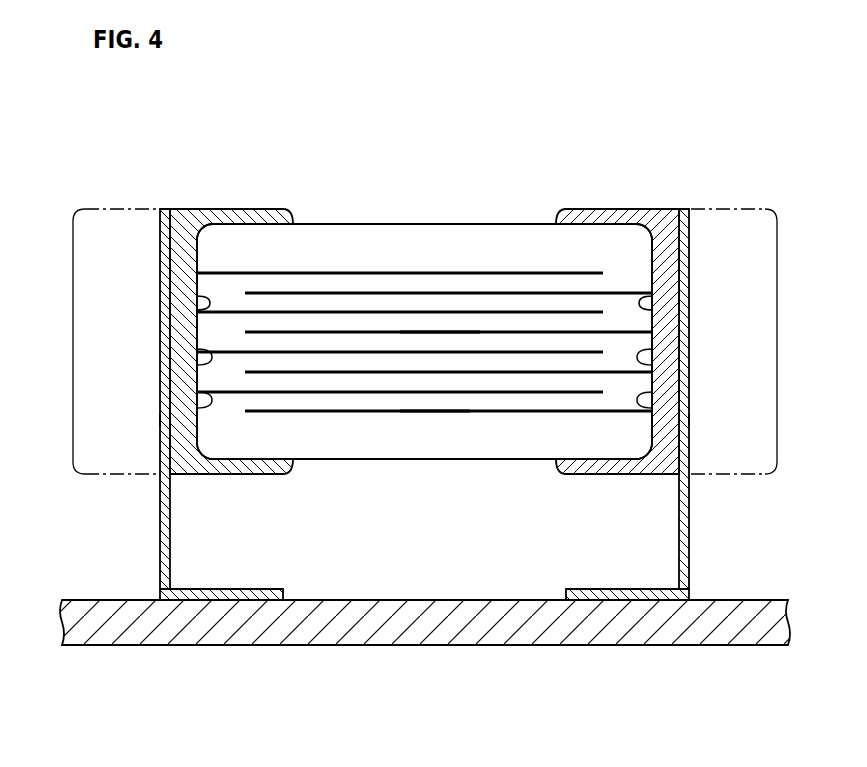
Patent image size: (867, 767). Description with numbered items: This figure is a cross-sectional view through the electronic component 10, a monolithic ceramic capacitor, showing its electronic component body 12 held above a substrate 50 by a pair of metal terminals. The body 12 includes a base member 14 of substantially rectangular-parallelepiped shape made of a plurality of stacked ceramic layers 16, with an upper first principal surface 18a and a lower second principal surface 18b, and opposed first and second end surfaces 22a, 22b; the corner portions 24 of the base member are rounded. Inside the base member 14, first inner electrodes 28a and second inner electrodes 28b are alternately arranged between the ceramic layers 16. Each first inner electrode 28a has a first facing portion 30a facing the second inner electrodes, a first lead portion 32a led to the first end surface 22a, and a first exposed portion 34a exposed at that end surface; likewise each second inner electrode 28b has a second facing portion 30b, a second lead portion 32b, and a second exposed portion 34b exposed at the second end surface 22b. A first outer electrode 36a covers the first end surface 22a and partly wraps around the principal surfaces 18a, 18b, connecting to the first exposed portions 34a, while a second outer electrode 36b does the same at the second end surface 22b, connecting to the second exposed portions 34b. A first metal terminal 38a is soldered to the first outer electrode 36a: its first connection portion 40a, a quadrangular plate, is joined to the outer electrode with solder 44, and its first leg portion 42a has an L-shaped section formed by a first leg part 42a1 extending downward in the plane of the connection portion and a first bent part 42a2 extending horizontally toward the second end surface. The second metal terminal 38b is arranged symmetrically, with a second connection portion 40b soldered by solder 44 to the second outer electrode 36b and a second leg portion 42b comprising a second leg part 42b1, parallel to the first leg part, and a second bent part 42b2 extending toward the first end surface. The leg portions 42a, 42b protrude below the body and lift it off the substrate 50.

The electronic component 10 is at (222, 198).
The electronic component body 12 is at (319, 213).
The base member 14 is at (342, 223).
The ceramic layers 16 is at (412, 323).
The first principal surface 18a is at (477, 224).
The second principal surface 18b is at (370, 460).
The first end surface 22a is at (186, 298).
The second end surface 22b is at (664, 300).
The corner portions 24 is at (193, 213).
The first inner electrodes 28a is at (299, 284).
The second inner electrodes 28b is at (570, 409).
The first facing portion 30a is at (428, 413).
The second facing portion 30b is at (444, 330).
The first lead portion 32a is at (193, 398).
The second lead portion 32b is at (660, 397).
The first exposed portion 34a is at (197, 357).
The second exposed portion 34b is at (660, 353).
The first outer electrode 36a is at (250, 210).
The second outer electrode 36b is at (592, 208).
The first metal terminal 38a is at (162, 207).
The second metal terminal 38b is at (687, 208).
The first connection portion 40a is at (73, 337).
The second connection portion 40b is at (777, 337).
The first leg portion 42a is at (252, 697).
The first leg part 42a1 is at (147, 478).
The first bent part 42a2 is at (282, 655).
The second leg portion 42b is at (738, 693).
The second leg part 42b1 is at (702, 478).
The second bent part 42b2 is at (688, 649).
The solder 44 is at (161, 420).
The substrate 50 is at (82, 600).